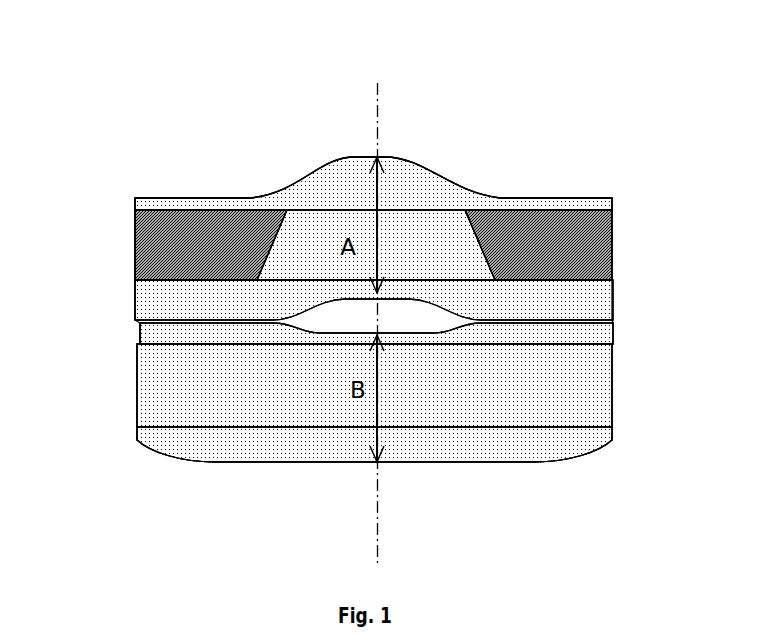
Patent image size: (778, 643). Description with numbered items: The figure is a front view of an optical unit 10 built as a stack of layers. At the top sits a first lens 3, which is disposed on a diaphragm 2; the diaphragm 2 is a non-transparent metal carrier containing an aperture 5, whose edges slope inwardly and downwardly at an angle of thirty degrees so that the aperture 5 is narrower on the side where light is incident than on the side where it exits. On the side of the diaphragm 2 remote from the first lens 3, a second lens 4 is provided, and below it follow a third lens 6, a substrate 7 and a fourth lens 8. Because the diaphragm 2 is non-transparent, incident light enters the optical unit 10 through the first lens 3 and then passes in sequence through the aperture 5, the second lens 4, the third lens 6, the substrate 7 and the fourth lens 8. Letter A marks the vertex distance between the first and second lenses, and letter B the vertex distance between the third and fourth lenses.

The diaphragm 2 is at (155, 260).
The first lens 3 is at (428, 168).
The second lens 4 is at (597, 298).
The aperture 5 is at (452, 230).
The third lens 6 is at (143, 332).
The substrate 7 is at (148, 393).
The fourth lens 8 is at (213, 445).
The optical unit 10 is at (656, 142).